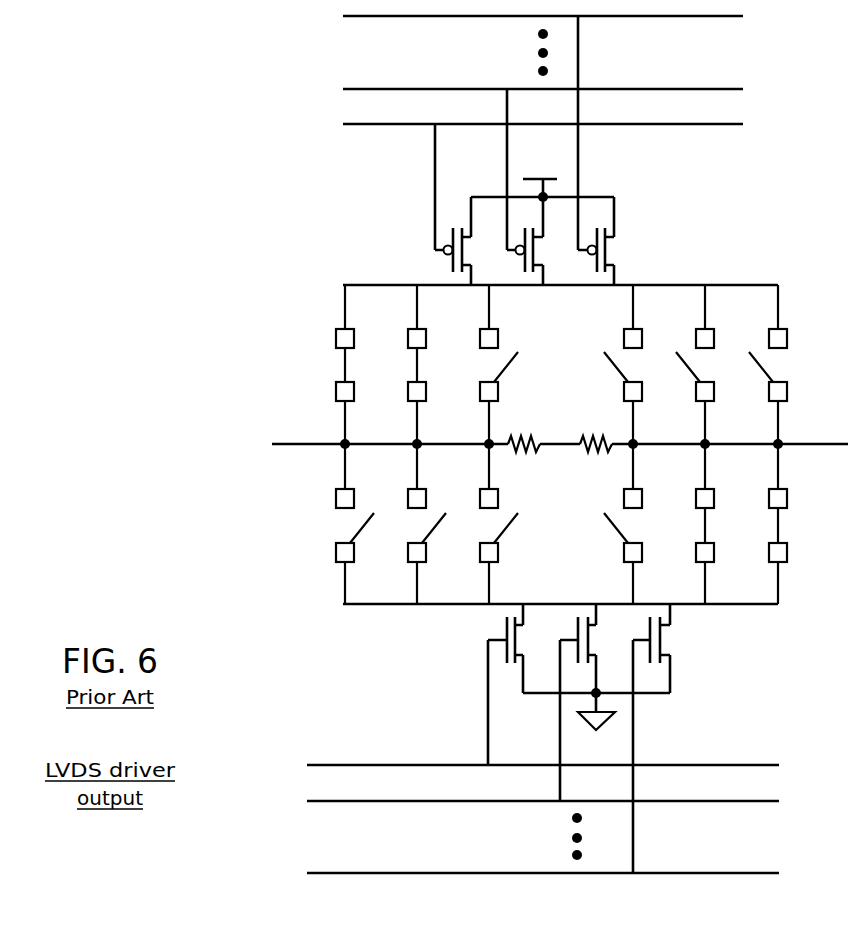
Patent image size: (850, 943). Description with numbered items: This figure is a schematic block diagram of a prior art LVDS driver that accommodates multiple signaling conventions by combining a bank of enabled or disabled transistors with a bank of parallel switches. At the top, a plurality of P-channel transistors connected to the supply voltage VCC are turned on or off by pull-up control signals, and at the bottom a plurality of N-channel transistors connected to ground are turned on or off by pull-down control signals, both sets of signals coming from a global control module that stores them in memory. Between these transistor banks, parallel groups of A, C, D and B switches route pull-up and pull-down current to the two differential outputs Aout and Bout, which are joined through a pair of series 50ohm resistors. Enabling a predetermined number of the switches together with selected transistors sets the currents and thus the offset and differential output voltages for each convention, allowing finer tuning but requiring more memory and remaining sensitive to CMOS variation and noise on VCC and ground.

The supply voltage VCC is at (543, 175).
The 50 Ohm resistors 50ohm is at (560, 444).
The output Aout is at (316, 457).
The output Bout is at (805, 457).